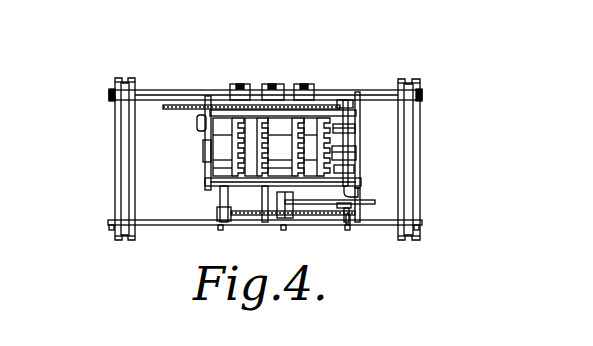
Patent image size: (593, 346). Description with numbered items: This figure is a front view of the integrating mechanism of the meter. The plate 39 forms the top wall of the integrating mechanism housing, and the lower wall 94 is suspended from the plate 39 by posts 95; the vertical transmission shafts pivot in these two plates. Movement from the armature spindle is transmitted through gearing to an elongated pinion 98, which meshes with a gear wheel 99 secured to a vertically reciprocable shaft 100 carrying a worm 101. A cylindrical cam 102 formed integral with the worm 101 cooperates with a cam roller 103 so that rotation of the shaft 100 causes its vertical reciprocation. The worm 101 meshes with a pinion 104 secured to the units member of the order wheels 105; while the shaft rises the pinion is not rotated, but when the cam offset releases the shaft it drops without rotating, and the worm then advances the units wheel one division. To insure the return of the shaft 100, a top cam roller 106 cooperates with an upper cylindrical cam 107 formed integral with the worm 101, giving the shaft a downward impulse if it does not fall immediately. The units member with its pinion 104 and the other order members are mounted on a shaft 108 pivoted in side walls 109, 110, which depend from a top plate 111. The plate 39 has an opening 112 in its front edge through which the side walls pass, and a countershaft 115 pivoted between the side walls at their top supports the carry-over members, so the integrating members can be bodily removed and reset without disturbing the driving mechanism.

The plate 39 is at (112, 96).
The lower wall 94 is at (375, 226).
The posts 95 is at (413, 177).
The elongated pinion 98 is at (293, 217).
The gear wheel 99 is at (365, 205).
The shaft 100 is at (348, 232).
The worm 101 is at (333, 100).
The cylindrical cam 102 is at (356, 166).
The cam roller 103 is at (358, 187).
The pinion 104 is at (350, 140).
The order wheels 105 is at (283, 50).
The top cam roller 106 is at (356, 100).
The cylindrical cam 107 is at (348, 98).
The shaft 108 is at (207, 162).
The side wall 109 is at (206, 152).
The side wall 110 is at (362, 172).
The top plate 111 is at (378, 92).
The opening 112 is at (205, 99).
The countershaft 115 is at (322, 100).